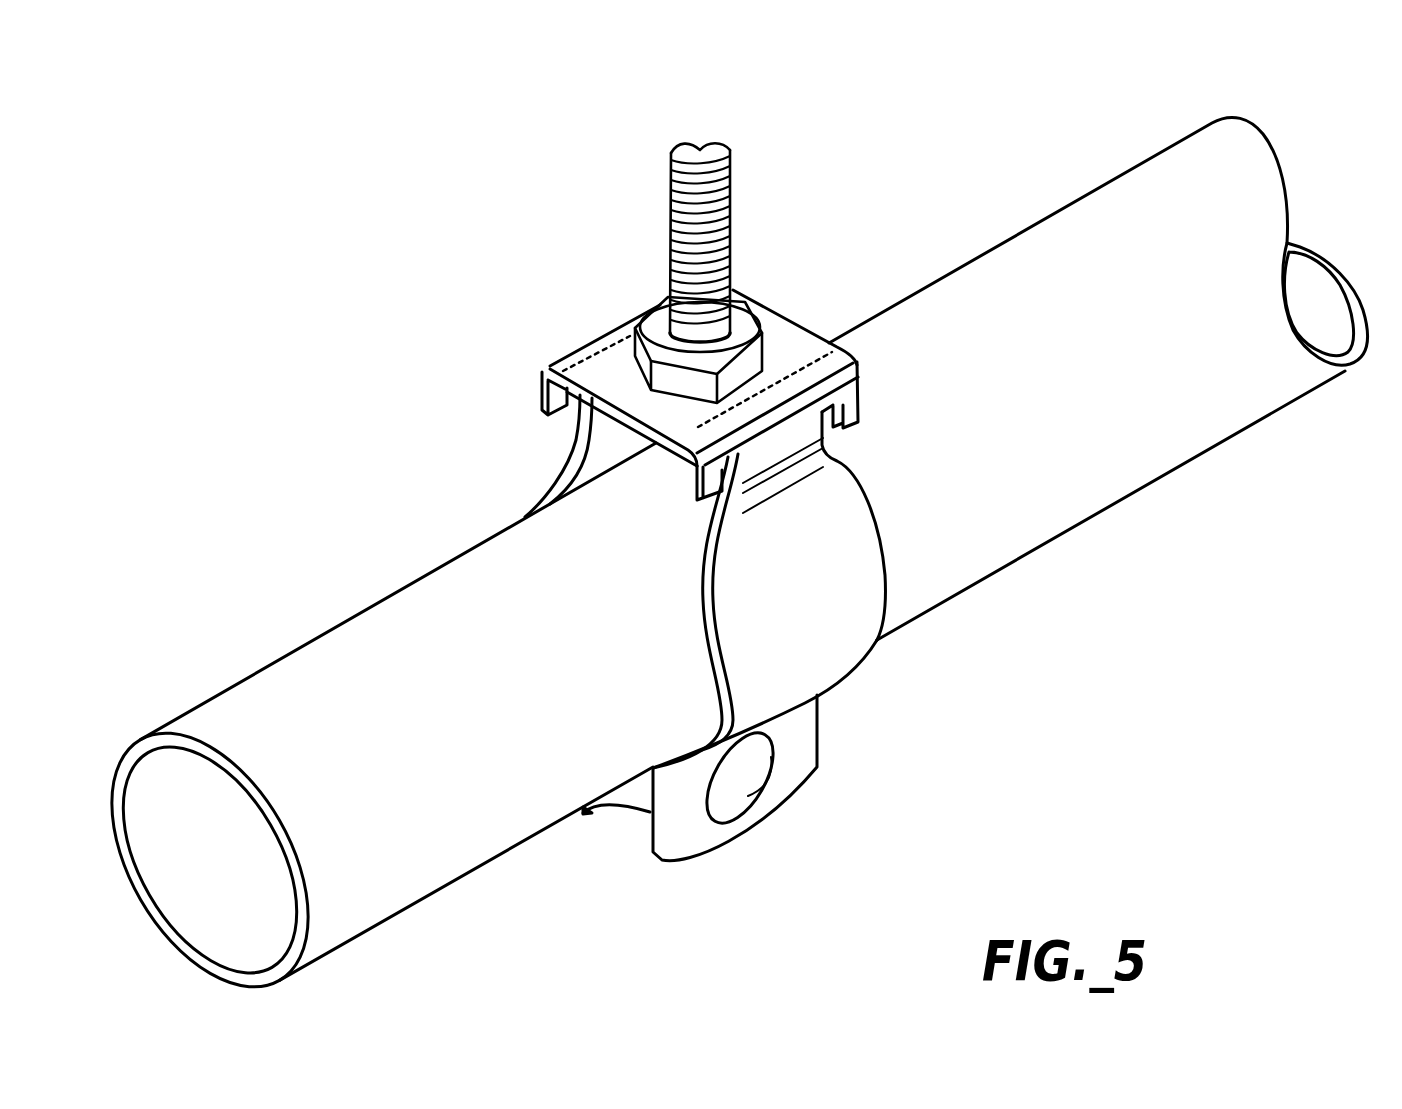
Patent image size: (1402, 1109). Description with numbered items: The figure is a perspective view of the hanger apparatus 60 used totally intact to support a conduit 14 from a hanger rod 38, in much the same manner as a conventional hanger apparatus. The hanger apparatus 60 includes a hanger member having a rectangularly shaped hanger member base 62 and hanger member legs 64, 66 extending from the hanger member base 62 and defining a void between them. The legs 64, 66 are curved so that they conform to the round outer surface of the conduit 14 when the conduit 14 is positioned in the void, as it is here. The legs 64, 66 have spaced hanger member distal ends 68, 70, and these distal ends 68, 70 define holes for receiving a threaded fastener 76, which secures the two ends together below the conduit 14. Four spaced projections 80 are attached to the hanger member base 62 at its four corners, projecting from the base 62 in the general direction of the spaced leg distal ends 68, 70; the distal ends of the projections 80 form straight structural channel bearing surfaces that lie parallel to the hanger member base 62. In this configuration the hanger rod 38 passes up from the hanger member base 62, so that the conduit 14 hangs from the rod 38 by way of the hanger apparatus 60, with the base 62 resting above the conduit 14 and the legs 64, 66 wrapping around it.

The conduit 14 is at (1050, 237).
The hanger rod 38 is at (682, 207).
The hanger apparatus 60 is at (721, 592).
The hanger member base 62 is at (770, 312).
The hanger member leg 64 is at (542, 492).
The hanger member leg 66 is at (867, 567).
The hanger member distal end 68 is at (607, 810).
The hanger member distal end 70 is at (733, 807).
The threaded fastener 76 is at (747, 793).
The projection 80 is at (550, 407).